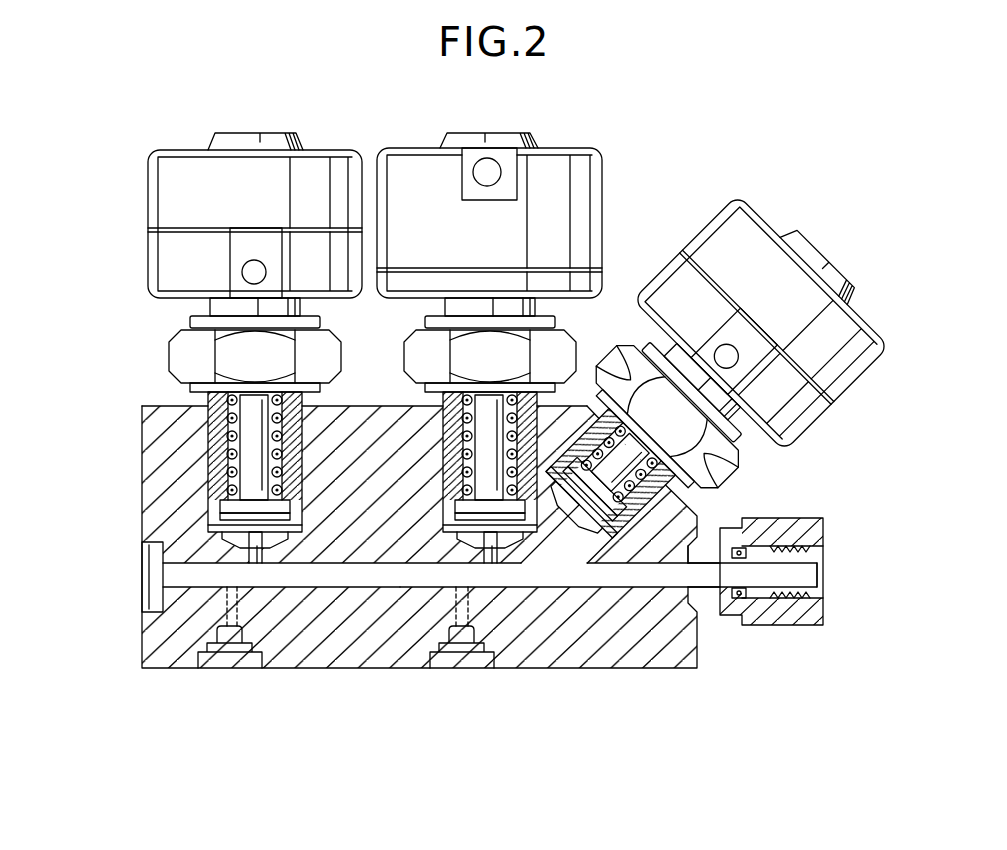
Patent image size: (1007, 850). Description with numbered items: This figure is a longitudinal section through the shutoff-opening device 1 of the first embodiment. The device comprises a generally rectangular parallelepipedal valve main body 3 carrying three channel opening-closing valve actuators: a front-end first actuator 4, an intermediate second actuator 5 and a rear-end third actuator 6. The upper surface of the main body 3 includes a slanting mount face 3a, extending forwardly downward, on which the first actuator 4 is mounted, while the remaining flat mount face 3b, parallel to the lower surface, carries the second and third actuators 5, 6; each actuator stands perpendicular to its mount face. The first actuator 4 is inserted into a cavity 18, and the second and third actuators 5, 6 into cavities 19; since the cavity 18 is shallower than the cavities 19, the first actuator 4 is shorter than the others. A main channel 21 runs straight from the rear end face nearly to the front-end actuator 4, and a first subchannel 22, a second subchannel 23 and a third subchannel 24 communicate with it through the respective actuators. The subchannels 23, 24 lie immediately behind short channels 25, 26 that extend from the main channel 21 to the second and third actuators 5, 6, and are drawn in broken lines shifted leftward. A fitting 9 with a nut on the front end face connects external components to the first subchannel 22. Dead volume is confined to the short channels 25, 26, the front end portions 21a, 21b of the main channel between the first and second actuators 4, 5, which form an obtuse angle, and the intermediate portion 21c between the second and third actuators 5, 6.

The shutoff-opening device 1 is at (493, 430).
The valve main body 3 is at (172, 497).
The mount face 3a is at (700, 512).
The mount face 3b is at (158, 405).
The first channel opening-closing valve actuator 4 is at (758, 235).
The second channel opening-closing valve actuator 5 is at (563, 168).
The third channel opening-closing valve actuator 6 is at (335, 162).
The fitting 9 is at (753, 619).
The cavity 18 is at (615, 462).
The cavities 19 is at (213, 434).
The main channel 21 is at (376, 588).
The front end portion of the main channel 21a is at (506, 584).
The front end portion of the main channel 21b is at (538, 563).
The intermediate portion of the main channel 21c is at (322, 588).
The first subchannel 22 is at (656, 580).
The second subchannel 23 is at (440, 640).
The third subchannel 24 is at (198, 630).
The short channel 25 is at (489, 556).
The short channel 26 is at (258, 566).